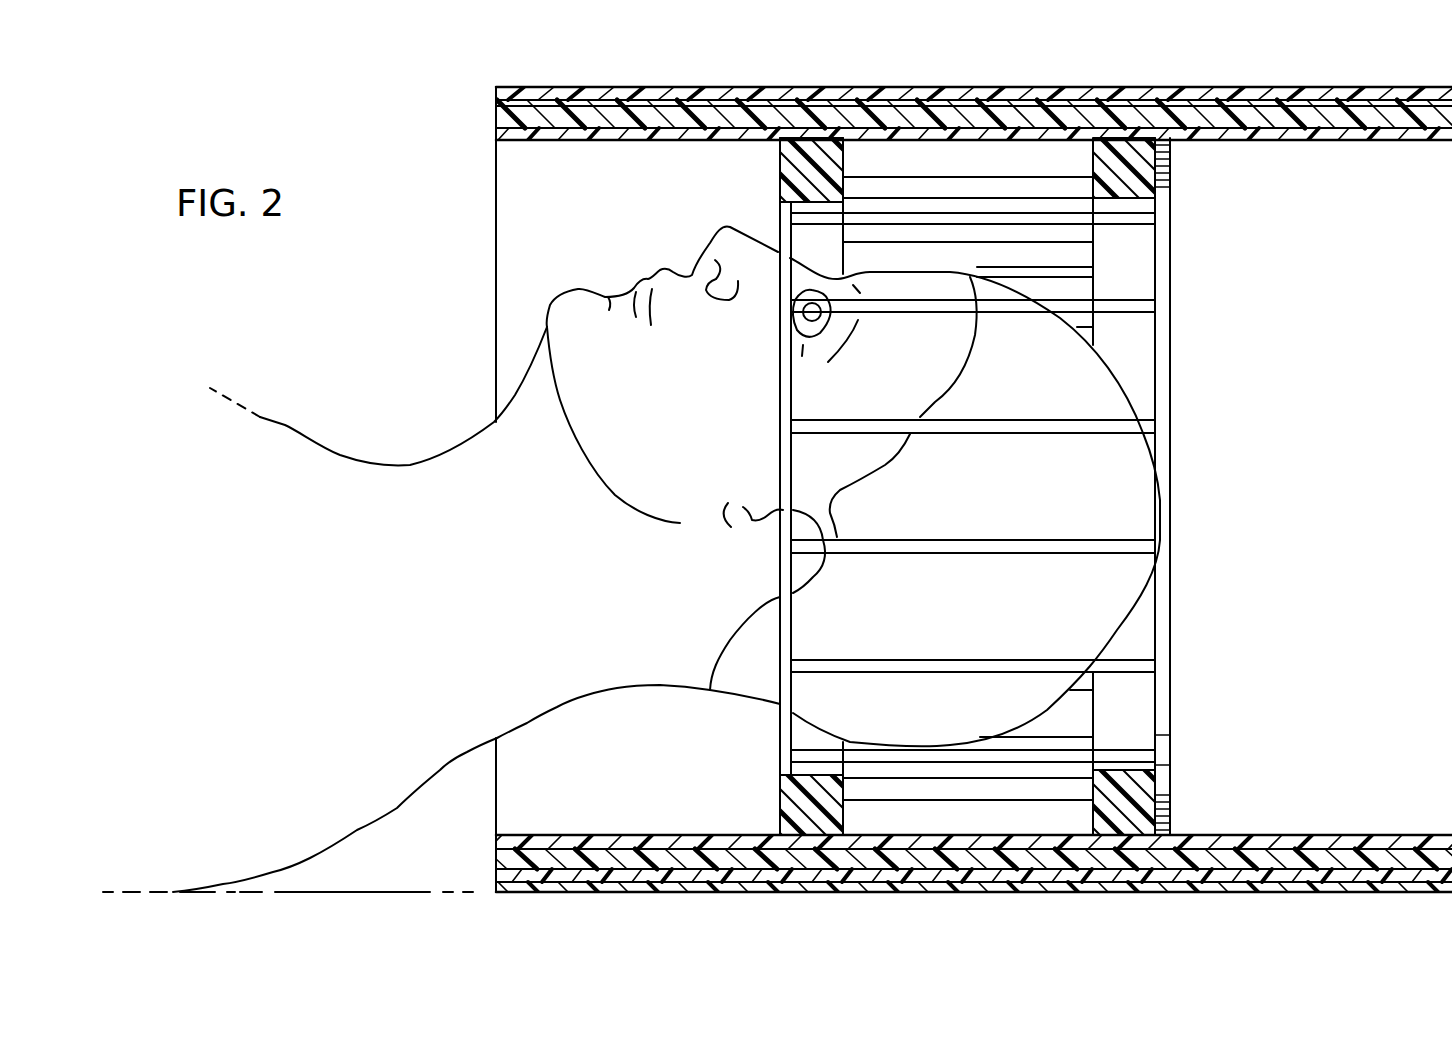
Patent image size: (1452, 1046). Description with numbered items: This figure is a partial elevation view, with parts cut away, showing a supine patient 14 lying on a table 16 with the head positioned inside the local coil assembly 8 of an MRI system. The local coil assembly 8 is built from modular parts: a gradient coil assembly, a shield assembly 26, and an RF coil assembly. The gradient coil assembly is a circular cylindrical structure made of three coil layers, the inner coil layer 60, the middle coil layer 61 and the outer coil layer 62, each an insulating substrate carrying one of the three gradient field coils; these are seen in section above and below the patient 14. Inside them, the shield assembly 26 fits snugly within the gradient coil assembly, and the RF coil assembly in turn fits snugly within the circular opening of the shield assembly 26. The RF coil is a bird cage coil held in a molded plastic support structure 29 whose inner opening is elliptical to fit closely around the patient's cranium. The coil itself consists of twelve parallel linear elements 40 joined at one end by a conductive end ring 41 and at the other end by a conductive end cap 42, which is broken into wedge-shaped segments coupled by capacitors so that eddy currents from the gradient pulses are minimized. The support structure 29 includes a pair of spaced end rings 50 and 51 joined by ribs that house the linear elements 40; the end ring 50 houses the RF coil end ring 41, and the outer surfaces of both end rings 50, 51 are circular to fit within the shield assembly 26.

The local coil assembly 8 is at (930, 463).
The patient 14 is at (516, 322).
The table 16 is at (436, 882).
The shield assembly 26 is at (496, 137).
The support structure 29 is at (1180, 425).
The linear elements 40 is at (985, 433).
The end ring 41 is at (795, 393).
The end cap 42 is at (1155, 346).
The end ring 50 is at (780, 158).
The end ring 51 is at (1145, 176).
The inner coil layer 60 is at (496, 127).
The middle coil layer 61 is at (496, 107).
The outer coil layer 62 is at (496, 89).